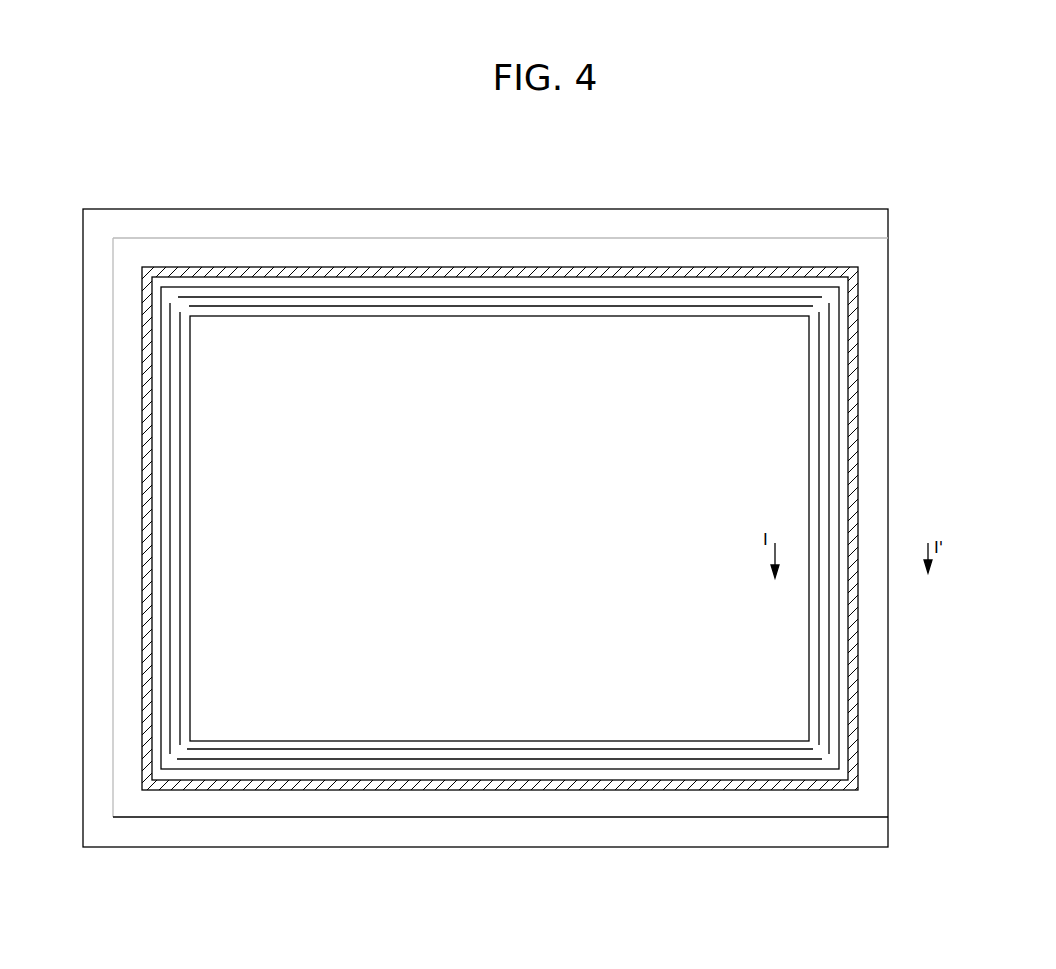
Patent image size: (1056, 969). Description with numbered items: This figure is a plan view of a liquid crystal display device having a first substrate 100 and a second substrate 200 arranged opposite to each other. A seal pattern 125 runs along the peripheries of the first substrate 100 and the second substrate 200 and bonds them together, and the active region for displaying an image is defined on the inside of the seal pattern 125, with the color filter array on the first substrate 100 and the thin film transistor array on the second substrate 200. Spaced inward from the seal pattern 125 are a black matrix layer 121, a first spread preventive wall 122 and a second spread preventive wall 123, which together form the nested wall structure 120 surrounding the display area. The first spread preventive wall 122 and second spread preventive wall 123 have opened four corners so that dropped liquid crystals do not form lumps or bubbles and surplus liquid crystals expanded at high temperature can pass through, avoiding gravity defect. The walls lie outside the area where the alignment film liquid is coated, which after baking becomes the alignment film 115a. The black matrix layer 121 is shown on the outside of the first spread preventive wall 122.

The second substrate 200 is at (808, 208).
The first substrate 100 is at (874, 238).
The alignment film 115a is at (815, 622).
The seal pattern 125 is at (857, 340).
The wiring unit 120 is at (598, 528).
The second spread preventive wall 123 is at (822, 395).
The first spread preventive wall 122 is at (830, 447).
The black matrix layer 121 is at (842, 500).